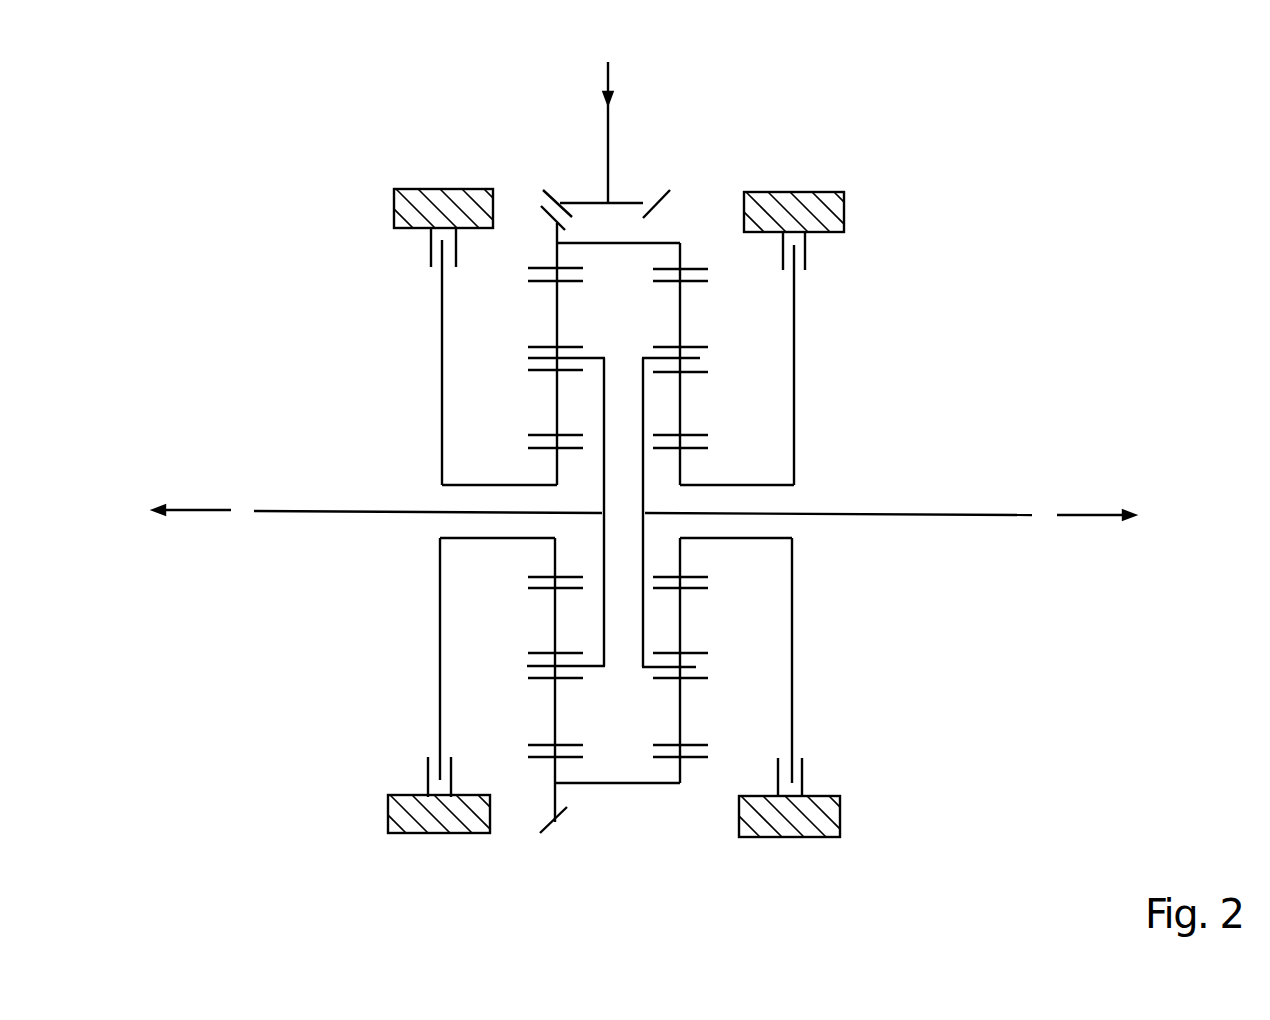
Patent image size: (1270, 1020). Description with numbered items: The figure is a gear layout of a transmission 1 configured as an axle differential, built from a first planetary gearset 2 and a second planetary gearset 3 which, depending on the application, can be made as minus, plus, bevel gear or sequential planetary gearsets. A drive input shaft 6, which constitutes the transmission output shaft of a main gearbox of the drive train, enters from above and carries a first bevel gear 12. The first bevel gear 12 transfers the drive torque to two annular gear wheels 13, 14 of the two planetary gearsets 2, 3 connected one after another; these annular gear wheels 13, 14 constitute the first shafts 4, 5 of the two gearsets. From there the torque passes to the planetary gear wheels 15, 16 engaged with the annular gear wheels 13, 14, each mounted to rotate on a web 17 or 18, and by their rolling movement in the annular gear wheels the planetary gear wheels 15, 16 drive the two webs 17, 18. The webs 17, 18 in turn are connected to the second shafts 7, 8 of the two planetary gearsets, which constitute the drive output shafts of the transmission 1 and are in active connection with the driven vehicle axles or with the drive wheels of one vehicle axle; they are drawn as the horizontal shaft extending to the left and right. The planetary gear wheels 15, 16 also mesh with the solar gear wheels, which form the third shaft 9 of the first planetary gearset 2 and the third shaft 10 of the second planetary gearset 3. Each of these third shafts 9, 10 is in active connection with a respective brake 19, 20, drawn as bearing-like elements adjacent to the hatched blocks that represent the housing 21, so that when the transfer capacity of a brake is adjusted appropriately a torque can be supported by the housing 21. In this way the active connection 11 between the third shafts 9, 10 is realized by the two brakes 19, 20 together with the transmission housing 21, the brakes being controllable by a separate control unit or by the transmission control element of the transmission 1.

The transmission 1 is at (1015, 262).
The first planetary gearset 2 is at (512, 357).
The second planetary gearset 3 is at (733, 370).
The first shaft 4 is at (548, 222).
The first shaft 5 is at (687, 243).
The drive input shaft 6 is at (601, 172).
The second shaft 7 is at (326, 522).
The second shaft 8 is at (908, 525).
The third shaft 9 is at (532, 492).
The third shaft 10 is at (696, 492).
The active connection 11 is at (510, 848).
The first bevel gear 12 is at (627, 200).
The annular gear wheel 13 is at (556, 243).
The annular gear wheel 14 is at (683, 267).
The planetary gear wheels 15 is at (555, 325).
The planetary gear wheels 16 is at (683, 330).
The web 17 is at (594, 357).
The web 18 is at (642, 667).
The brake 19 is at (422, 252).
The brake 20 is at (812, 256).
The housing 21 is at (457, 200).